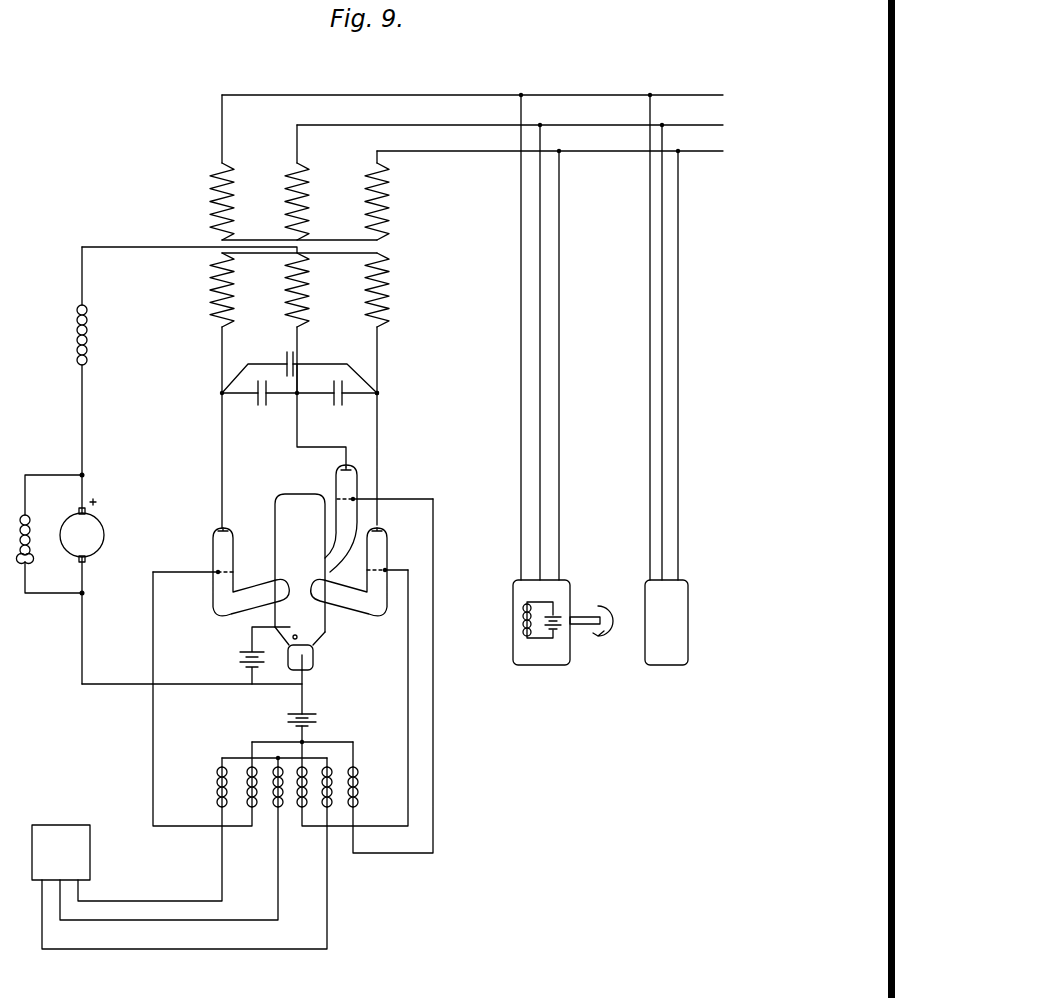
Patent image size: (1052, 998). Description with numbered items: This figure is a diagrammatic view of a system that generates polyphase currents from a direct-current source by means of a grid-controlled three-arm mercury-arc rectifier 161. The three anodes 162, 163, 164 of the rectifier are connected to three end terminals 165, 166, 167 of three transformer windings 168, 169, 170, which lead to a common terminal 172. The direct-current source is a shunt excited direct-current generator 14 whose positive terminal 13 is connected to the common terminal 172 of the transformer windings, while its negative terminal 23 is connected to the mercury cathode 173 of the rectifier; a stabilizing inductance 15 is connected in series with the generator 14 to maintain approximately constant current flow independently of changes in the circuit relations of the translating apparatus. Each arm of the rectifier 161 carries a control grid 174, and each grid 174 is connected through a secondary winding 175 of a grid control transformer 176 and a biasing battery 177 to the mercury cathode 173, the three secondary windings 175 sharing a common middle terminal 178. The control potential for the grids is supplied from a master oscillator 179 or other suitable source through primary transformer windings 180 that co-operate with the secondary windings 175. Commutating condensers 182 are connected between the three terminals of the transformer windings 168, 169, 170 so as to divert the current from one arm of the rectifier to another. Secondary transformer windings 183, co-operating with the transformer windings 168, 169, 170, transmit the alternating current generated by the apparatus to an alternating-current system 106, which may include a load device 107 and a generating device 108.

The positive terminal 13 is at (84, 475).
The direct-current generator 14 is at (100, 535).
The stabilizing inductance 15 is at (88, 328).
The negative terminal 23 is at (84, 593).
The alternating-current system 106 is at (455, 137).
The load device 107 is at (560, 590).
The generating device 108 is at (685, 583).
The grid-controlled three-arm rectifier 161 is at (327, 617).
The anode 162 is at (229, 536).
The anode 163 is at (345, 468).
The anode 164 is at (383, 526).
The end terminal 165 is at (220, 394).
The end terminal 166 is at (298, 398).
The end terminal 167 is at (378, 393).
The transformer winding 168 is at (212, 317).
The transformer winding 169 is at (283, 290).
The transformer winding 170 is at (362, 309).
The common terminal 172 is at (297, 247).
The mercury cathode 173 is at (313, 660).
The control grid 174 is at (218, 571).
The secondary winding 175 is at (253, 809).
The grid control transformer 176 is at (309, 774).
The biasing battery 177 is at (313, 719).
The common middle terminal 178 is at (305, 741).
The master oscillator 179 is at (61, 852).
The primary transformer winding 180 is at (279, 808).
The commutating condenser 182 is at (287, 364).
The secondary transformer winding 183 is at (309, 216).